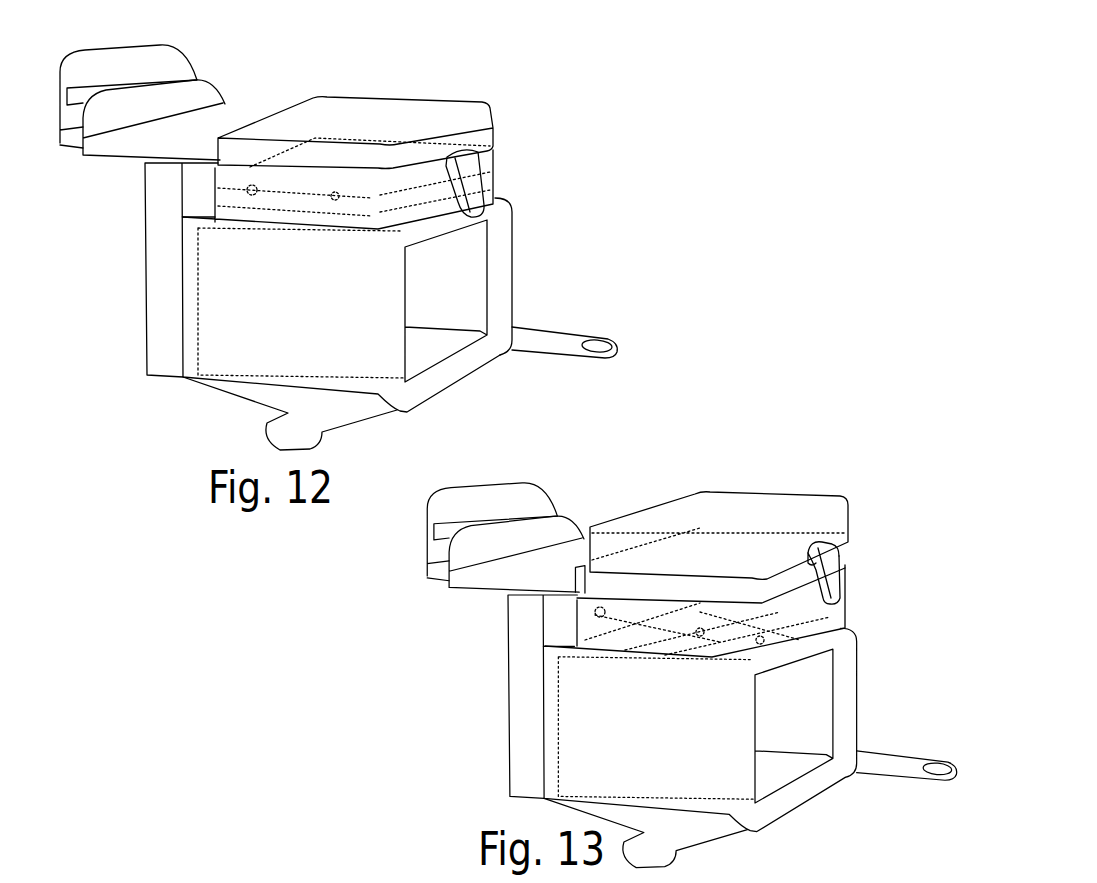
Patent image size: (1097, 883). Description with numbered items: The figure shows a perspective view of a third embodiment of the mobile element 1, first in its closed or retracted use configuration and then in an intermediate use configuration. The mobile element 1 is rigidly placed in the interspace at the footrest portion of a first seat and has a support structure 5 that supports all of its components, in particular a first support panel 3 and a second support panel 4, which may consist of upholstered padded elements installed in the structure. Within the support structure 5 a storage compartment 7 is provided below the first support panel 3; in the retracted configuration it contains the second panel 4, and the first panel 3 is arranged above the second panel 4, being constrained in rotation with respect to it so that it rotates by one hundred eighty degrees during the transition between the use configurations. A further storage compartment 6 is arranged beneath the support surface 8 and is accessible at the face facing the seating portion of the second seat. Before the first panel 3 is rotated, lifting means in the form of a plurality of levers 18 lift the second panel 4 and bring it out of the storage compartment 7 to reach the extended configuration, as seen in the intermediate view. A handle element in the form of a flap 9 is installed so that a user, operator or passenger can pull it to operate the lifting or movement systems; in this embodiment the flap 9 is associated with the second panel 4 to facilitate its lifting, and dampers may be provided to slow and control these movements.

In FIG. 12, the mobile element 1 is at (452, 72).
In FIG. 13, the mobile element 1 is at (830, 480).
In FIG. 12, the first support panel 3 is at (458, 108).
In FIG. 13, the first support panel 3 is at (744, 508).
In FIG. 13, the second support panel 4 is at (846, 548).
In FIG. 12, the support structure 5 is at (230, 297).
In FIG. 12, the storage compartment 6 is at (467, 283).
In FIG. 13, the storage compartment 6 is at (820, 713).
In FIG. 12, the storage compartment 7 is at (498, 166).
In FIG. 13, the storage compartment 7 is at (827, 612).
In FIG. 12, the support surface 8 is at (345, 120).
In FIG. 12, the flap 9 is at (477, 195).
In FIG. 13, the flap 9 is at (847, 590).
In FIG. 13, the levers 18 is at (760, 618).